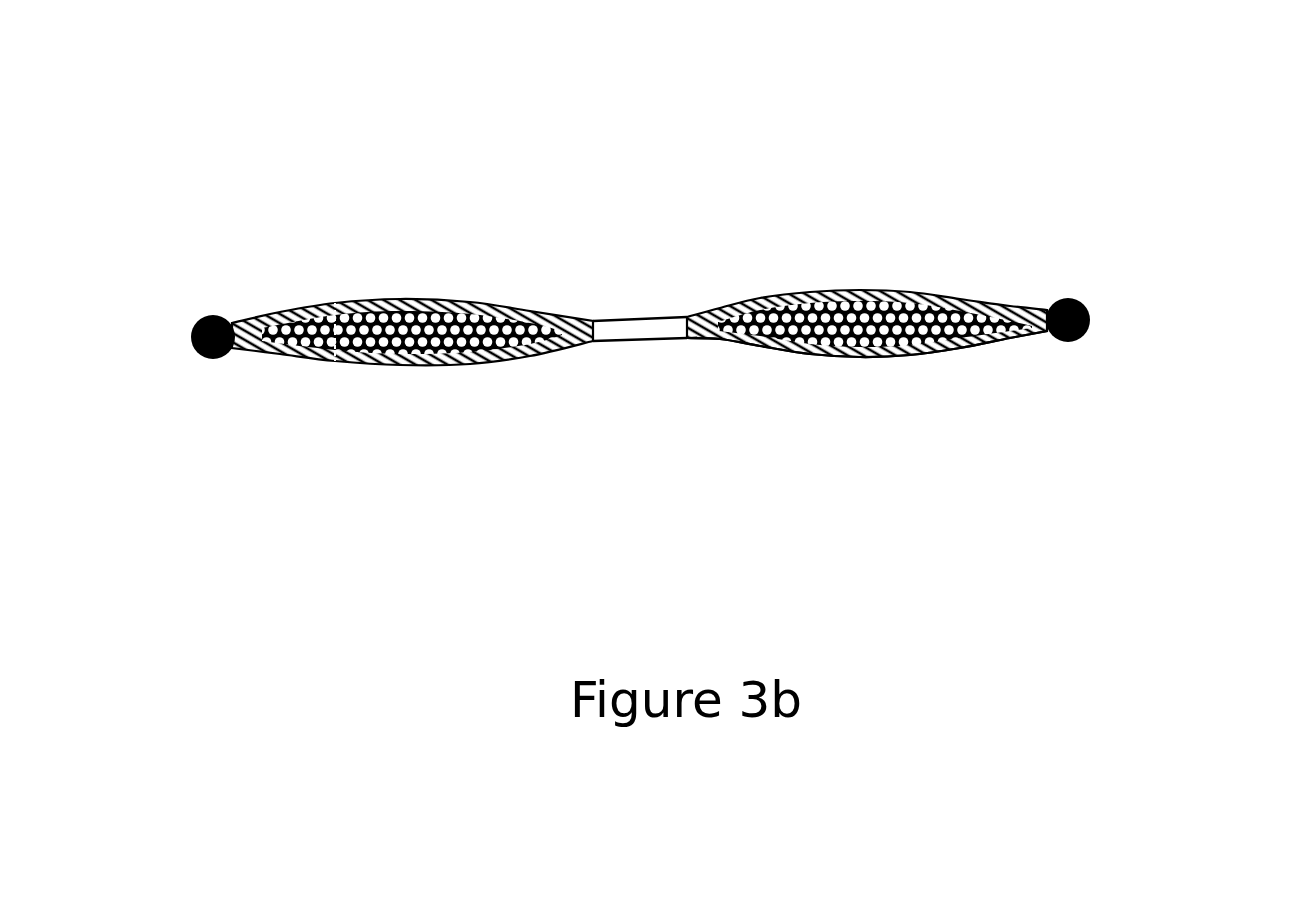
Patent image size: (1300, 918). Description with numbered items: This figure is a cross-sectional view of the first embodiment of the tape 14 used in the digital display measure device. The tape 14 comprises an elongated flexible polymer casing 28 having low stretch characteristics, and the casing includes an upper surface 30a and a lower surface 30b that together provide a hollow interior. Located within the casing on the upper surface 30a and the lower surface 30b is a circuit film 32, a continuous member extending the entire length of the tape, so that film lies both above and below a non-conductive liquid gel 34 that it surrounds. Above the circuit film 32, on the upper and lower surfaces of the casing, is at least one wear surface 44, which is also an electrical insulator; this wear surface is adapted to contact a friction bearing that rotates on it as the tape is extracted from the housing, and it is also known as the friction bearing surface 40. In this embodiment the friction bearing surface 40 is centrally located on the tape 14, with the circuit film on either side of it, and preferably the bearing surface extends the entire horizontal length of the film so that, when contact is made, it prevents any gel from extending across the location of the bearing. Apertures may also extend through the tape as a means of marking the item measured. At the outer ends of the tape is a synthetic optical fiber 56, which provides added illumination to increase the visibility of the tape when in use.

The tape 14 is at (995, 523).
The elongated flexible polymer casing 28 is at (410, 173).
The circuit film 32 is at (393, 340).
The non-conductive liquid gel 34 is at (492, 253).
The friction bearing surface 40 is at (642, 415).
The wear surface 44 is at (760, 407).
The upper surface 30a is at (971, 323).
The lower surface 30b is at (971, 422).
The synthetic optical fiber 56 is at (1092, 320).